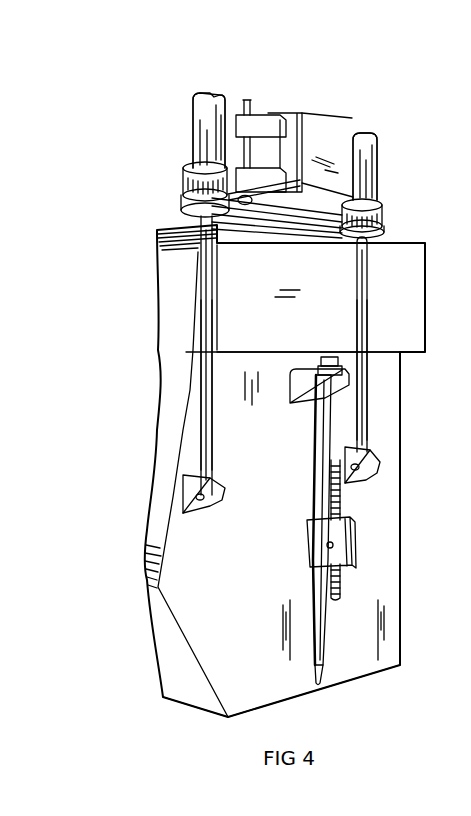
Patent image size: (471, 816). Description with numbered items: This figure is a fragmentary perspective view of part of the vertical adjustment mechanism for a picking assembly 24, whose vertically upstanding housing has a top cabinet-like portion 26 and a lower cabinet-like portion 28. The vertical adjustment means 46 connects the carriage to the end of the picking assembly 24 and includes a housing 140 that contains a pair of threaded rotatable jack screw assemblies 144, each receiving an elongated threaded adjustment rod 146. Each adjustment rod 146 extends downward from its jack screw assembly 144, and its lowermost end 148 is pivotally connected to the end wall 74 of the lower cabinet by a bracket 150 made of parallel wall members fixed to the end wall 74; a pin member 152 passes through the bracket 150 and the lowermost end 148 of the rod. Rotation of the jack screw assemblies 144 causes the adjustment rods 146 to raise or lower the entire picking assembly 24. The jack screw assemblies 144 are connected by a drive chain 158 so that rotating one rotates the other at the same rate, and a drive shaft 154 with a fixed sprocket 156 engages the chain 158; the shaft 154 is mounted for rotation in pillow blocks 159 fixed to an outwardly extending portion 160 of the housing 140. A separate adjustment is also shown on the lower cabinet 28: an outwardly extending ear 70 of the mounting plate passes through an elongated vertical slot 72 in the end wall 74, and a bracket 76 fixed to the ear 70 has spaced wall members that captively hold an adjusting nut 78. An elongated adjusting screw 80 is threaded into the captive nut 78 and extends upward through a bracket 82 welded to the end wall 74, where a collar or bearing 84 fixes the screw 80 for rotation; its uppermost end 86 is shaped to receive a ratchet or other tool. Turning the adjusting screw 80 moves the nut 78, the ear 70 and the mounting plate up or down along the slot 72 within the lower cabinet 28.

The picking assembly 24 is at (400, 528).
The top cabinet-like portion 26 is at (410, 309).
The lower cabinet-like portion 28 is at (264, 664).
The vertical adjustment means 46 is at (188, 120).
The ear 70 is at (318, 433).
The elongated vertical slot 72 is at (322, 681).
The end wall 74 is at (390, 613).
The bracket 76 is at (312, 535).
The adjusting nut 78 is at (327, 547).
The adjusting screw 80 is at (343, 583).
The bracket 82 is at (297, 380).
The collar or bearing 84 is at (326, 366).
The uppermost end 86 is at (334, 357).
The housing 140 is at (340, 168).
The jack screw assembly 144 is at (194, 145).
The adjustment rod 146 is at (207, 290).
The lowermost end 148 is at (205, 455).
The bracket 150 is at (222, 500).
The pin member 152 is at (197, 497).
The shaft 154 is at (286, 150).
The sprocket 156 is at (247, 206).
The drive chain 158 is at (330, 228).
The pillow block 159 is at (252, 118).
The outwardly extending portion 160 is at (312, 160).